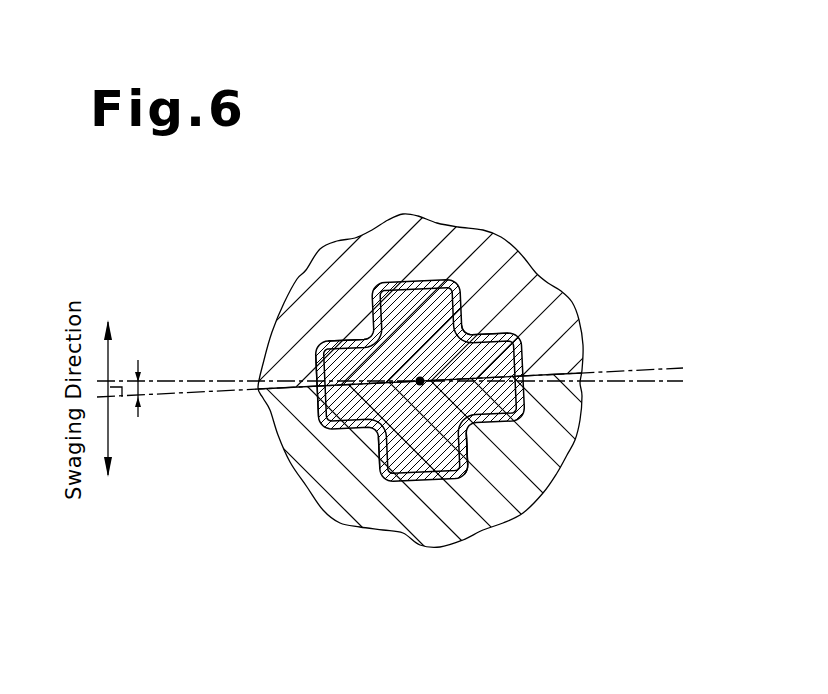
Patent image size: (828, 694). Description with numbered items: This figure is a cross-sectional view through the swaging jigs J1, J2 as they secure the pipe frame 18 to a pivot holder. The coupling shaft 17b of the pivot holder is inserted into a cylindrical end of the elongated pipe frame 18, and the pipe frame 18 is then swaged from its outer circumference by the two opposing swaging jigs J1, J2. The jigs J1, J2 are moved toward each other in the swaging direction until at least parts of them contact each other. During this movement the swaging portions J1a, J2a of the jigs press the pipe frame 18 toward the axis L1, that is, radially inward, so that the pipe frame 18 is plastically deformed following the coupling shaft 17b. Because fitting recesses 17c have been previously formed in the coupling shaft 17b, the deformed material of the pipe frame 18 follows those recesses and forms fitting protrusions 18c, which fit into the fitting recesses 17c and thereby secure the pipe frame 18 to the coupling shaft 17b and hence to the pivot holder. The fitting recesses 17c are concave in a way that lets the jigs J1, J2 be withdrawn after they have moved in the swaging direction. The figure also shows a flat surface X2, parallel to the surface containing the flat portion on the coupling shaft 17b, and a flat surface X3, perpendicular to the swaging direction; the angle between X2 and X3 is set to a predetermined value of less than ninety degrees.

The pipe frame 18 is at (384, 282).
The fitting protrusion 18c is at (462, 340).
The swaging jig J1 is at (571, 300).
The swaging jig J2 is at (571, 417).
The swaging portion J1a is at (358, 343).
The swaging portion J2a is at (386, 440).
The coupling shaft 17b is at (321, 401).
The fitting recess 17c is at (467, 474).
The axis L1 is at (420, 376).
The flat surface X2 is at (203, 381).
The flat surface X3 is at (189, 393).